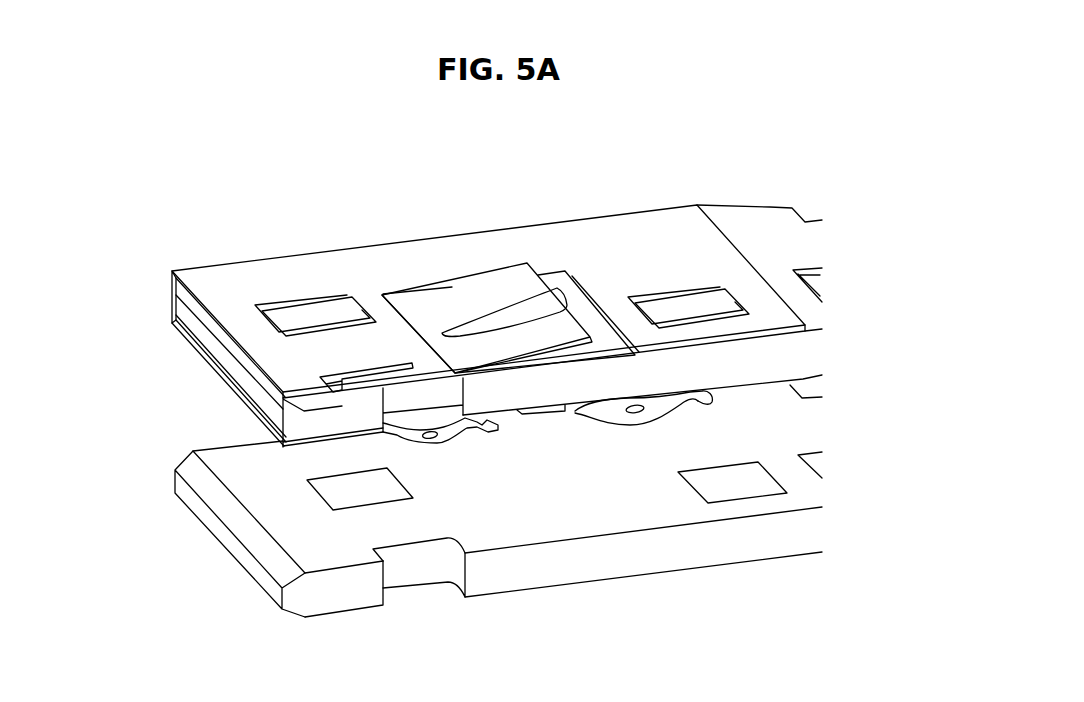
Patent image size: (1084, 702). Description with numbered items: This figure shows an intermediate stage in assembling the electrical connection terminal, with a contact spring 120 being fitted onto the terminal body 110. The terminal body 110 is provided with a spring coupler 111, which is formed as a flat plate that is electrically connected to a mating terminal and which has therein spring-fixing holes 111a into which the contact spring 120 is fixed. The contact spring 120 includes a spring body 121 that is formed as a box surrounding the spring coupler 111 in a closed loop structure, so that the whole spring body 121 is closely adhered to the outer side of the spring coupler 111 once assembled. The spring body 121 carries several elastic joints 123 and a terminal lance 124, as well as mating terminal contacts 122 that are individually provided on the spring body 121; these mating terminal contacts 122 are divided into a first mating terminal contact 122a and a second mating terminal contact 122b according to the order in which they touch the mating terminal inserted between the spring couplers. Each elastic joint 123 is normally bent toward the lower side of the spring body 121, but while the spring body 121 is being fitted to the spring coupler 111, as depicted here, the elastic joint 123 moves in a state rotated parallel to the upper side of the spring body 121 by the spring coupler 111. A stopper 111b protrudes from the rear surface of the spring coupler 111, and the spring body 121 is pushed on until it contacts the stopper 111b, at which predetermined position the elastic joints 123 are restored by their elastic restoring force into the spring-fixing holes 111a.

The terminal body 110 is at (443, 359).
The spring coupler 111 is at (748, 221).
The spring-fixing hole 111a is at (462, 393).
The stopper 111b is at (814, 276).
The contact spring 120 is at (292, 245).
The spring body 121 is at (362, 263).
The mating terminal contact 122 is at (560, 516).
The first mating terminal contact 122a is at (412, 444).
The second mating terminal contact 122b is at (641, 420).
The elastic joint 123 is at (296, 312).
The terminal lance 124 is at (477, 291).